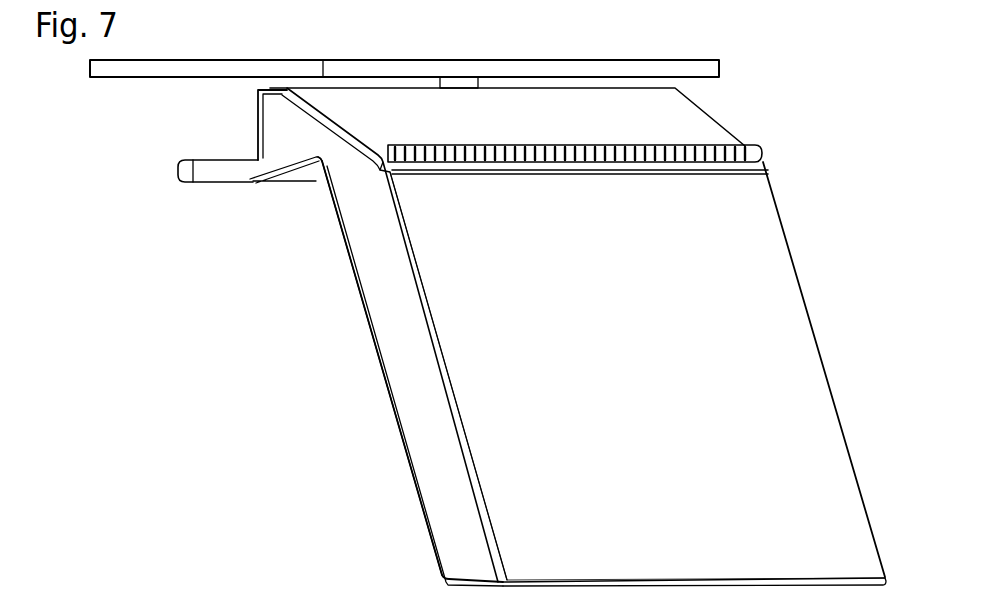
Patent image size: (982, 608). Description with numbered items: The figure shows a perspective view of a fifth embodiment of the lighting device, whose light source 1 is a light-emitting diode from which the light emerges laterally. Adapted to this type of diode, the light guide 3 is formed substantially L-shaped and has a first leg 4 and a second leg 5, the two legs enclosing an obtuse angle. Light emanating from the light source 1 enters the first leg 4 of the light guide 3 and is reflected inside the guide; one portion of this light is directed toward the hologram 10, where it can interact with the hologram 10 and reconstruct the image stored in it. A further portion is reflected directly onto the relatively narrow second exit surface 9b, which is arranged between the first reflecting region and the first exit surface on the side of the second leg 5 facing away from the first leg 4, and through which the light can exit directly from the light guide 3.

The light source 1 is at (458, 82).
The light guide 3 is at (326, 348).
The first leg 4 is at (250, 118).
The second leg 5 is at (410, 498).
The second exit surface 9b is at (738, 155).
The hologram 10 is at (650, 386).